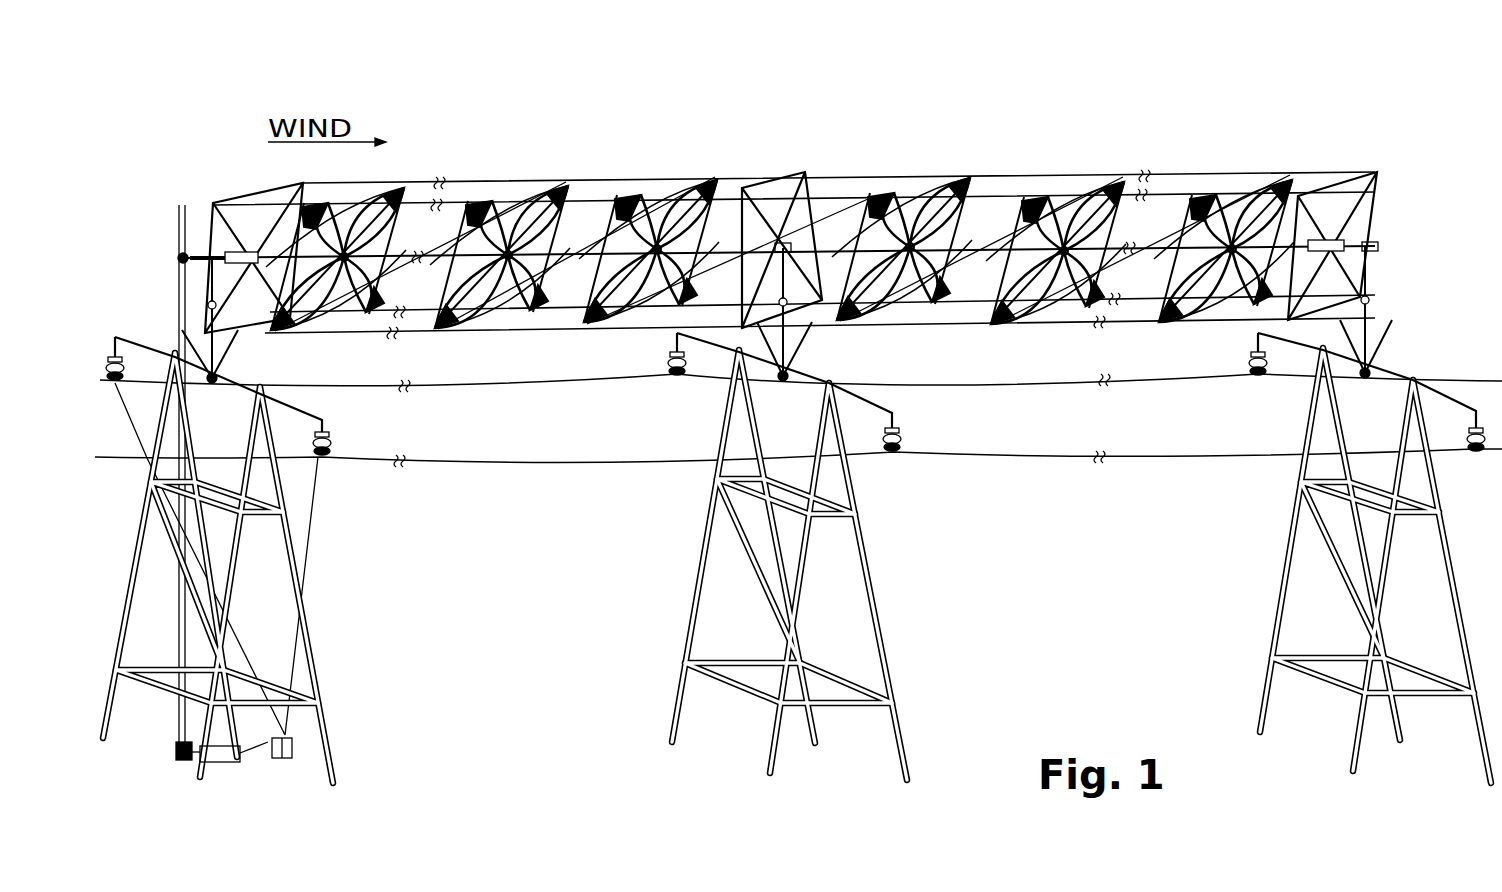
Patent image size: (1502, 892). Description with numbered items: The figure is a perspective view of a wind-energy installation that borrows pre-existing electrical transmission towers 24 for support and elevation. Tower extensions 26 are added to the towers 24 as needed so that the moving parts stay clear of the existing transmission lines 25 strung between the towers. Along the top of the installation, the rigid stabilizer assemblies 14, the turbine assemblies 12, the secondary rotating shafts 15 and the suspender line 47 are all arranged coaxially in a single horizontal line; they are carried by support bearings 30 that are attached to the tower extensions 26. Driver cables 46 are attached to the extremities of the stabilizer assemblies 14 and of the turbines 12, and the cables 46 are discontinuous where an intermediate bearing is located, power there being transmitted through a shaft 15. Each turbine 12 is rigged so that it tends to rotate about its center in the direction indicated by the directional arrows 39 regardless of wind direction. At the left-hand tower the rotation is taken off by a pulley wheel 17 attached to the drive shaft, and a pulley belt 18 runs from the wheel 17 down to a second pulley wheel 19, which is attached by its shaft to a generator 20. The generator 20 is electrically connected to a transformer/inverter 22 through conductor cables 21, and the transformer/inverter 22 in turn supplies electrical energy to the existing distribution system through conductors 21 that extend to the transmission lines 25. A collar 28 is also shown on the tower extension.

The turbine assembly 12 is at (345, 333).
The rigid stabilizer assembly 14 is at (290, 208).
The secondary rotating shaft 15 is at (786, 256).
The pulley wheel 17 is at (180, 253).
The pulley belt 18 is at (179, 620).
The pulley wheel 19 is at (178, 757).
The generator 20 is at (232, 763).
The conductor cable 21 is at (332, 520).
The transformer/inverter 22 is at (293, 746).
The electrical transmission tower 24 is at (305, 624).
The transmission line 25 is at (570, 386).
The tower extension 26 is at (218, 367).
The collar 28 is at (208, 306).
The support bearing 30 is at (1378, 222).
The directional arrow 39 is at (420, 176).
The driver cable 46 is at (1075, 182).
The suspender line 47 is at (1003, 258).